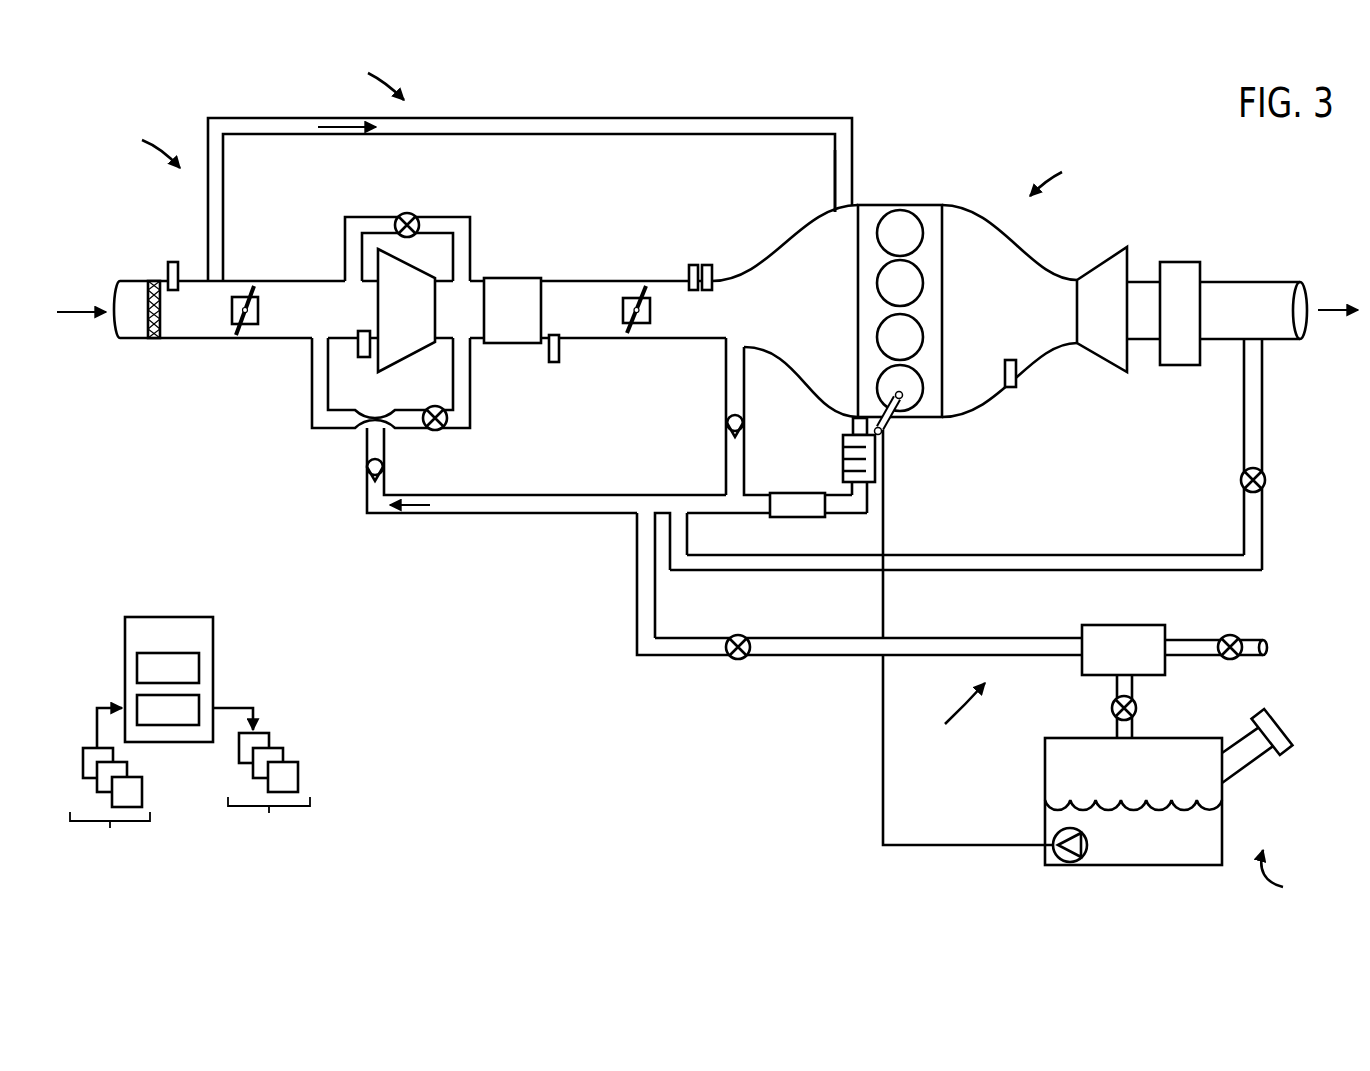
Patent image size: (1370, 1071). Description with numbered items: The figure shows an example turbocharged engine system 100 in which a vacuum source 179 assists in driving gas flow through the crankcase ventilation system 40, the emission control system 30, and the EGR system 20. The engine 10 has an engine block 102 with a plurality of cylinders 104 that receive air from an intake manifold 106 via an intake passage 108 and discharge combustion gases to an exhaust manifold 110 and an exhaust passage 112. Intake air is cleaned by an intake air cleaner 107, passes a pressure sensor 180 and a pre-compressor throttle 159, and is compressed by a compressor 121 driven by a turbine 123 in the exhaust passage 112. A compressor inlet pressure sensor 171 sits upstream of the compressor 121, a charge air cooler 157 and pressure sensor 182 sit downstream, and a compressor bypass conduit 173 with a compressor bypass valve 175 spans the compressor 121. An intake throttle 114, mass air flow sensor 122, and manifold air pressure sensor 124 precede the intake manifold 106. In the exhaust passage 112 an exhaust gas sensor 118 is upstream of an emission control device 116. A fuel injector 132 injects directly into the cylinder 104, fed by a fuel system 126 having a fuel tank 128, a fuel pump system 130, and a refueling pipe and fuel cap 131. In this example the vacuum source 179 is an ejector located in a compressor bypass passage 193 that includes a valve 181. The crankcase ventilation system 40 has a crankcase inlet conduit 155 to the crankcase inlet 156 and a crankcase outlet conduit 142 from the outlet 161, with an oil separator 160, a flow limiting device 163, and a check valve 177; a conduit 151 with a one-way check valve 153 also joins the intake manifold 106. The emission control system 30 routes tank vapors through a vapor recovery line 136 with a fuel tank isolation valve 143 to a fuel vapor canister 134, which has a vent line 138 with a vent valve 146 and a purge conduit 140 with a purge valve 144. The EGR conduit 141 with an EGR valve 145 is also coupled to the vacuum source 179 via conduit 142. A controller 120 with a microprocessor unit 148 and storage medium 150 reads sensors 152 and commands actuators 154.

The engine 10 is at (1063, 175).
The exhaust gas recirculation (EGR) system 20 is at (1276, 448).
The emission control system 30 is at (955, 711).
The crankcase ventilation system 40 is at (361, 92).
The engine system 100 is at (143, 145).
The engine block 102 is at (942, 296).
The cylinders 104 is at (925, 232).
The intake manifold 106 is at (796, 317).
The intake air cleaner 107 is at (154, 338).
The intake passage 108 is at (236, 358).
The exhaust manifold 110 is at (1021, 319).
The exhaust passage 112 is at (1290, 282).
The intake throttle 114 is at (650, 316).
The emission control device 116 is at (1175, 262).
The exhaust gas sensor 118 is at (1016, 376).
The controller 120 is at (156, 641).
The compressor 121 is at (406, 310).
The mass air flow sensor 122 is at (694, 264).
The turbine 123 is at (1102, 309).
The manifold air pressure sensor 124 is at (707, 264).
The fuel system 126 is at (1288, 873).
The fuel tank 128 is at (1222, 843).
The fuel pump system 130 is at (1073, 833).
The refueling pipe and fuel cap 131 is at (1268, 718).
The fuel injector 132 is at (890, 430).
The fuel vapor canister 134 is at (1123, 650).
The vapor recovery line 136 is at (1134, 688).
The vent line 138 is at (1175, 638).
The purge conduit 140 is at (1000, 638).
The EGR conduit 141 is at (1045, 555).
The crankcase outlet conduit 142 is at (700, 515).
The fuel tank isolation valve 143 is at (1112, 708).
The purge valve 144 is at (742, 636).
The EGR valve 145 is at (1240, 480).
The vent valve 146 is at (1232, 636).
The microprocessor unit 148 is at (156, 679).
The computer readable storage medium 150 is at (156, 721).
The conduit 151 is at (724, 360).
The sensors 152 is at (110, 809).
The one-way check valve 153 is at (726, 427).
The actuators 154 is at (269, 794).
The crankcase inlet conduit 155 is at (705, 118).
The inlet 156 is at (848, 200).
The charge air cooler 157 is at (512, 310).
The pre-compressor throttle 159 is at (245, 295).
The oil separator 160 is at (843, 462).
The outlet 161 is at (857, 405).
The flow limiting device 163 is at (795, 517).
The compressor inlet pressure sensor 171 is at (363, 358).
The compressor bypass conduit 173 is at (460, 217).
The compressor bypass valve 175 is at (401, 214).
The check valve 177 is at (365, 472).
The vacuum source 179 is at (366, 470).
The pressure sensor 180 is at (170, 276).
The valve 181 is at (441, 430).
The pressure sensor 182 is at (553, 363).
The compressor bypass passage 193 is at (312, 372).